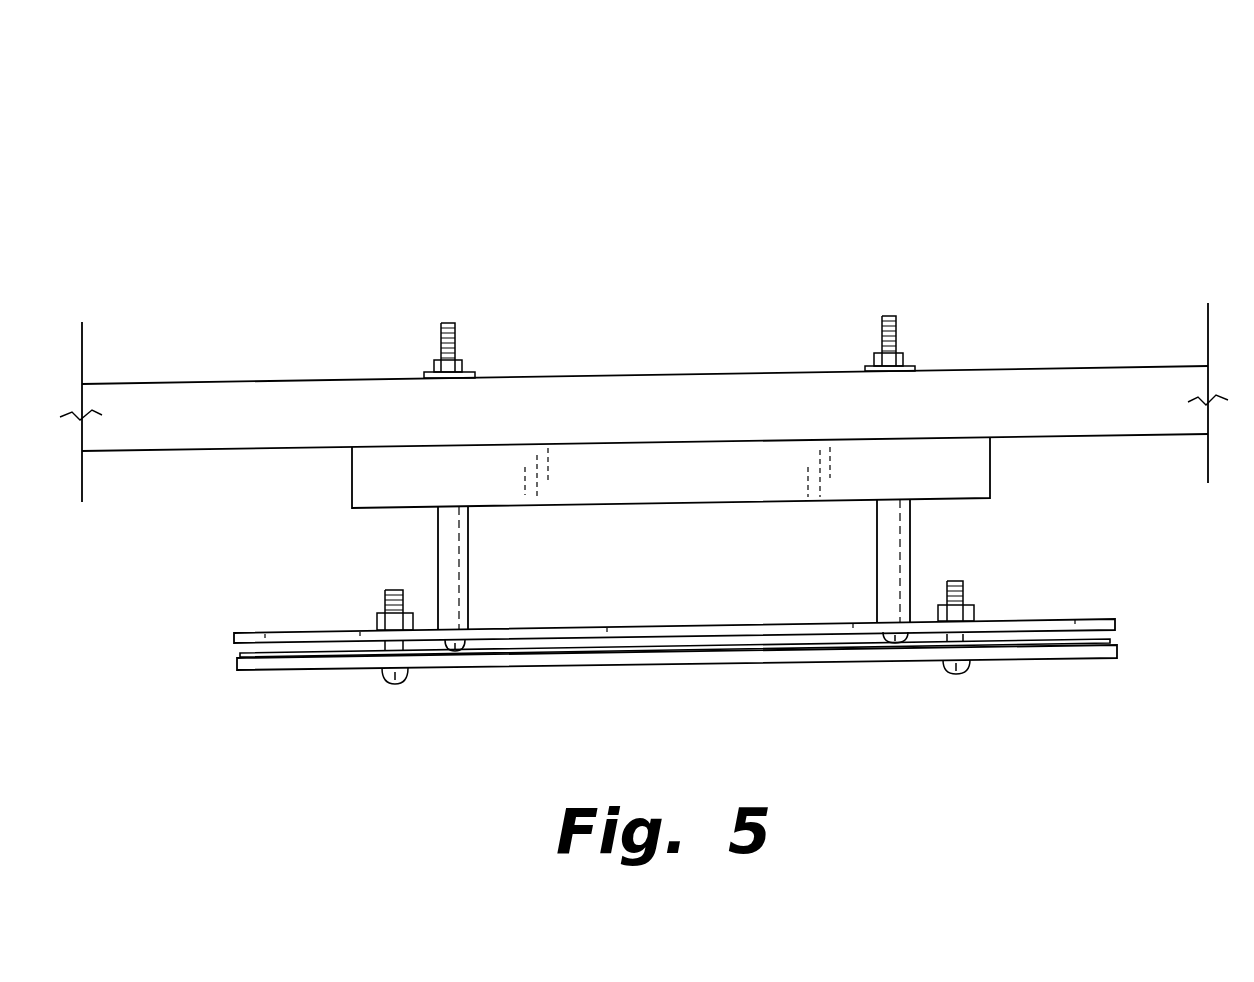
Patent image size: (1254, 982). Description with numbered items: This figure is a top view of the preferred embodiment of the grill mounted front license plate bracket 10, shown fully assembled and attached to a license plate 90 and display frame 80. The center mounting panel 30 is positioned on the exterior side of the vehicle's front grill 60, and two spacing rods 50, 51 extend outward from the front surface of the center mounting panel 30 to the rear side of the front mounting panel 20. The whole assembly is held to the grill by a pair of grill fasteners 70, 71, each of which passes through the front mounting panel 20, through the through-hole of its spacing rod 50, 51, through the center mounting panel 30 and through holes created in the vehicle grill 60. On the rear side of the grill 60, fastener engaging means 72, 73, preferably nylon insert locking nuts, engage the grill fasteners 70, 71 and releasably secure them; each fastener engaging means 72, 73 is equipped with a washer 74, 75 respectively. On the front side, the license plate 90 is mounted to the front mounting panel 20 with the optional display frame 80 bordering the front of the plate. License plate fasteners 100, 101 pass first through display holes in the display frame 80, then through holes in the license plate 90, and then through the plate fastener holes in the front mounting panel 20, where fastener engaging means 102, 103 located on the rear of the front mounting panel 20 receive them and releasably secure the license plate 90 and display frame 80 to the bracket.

The grill mounted front license plate bracket 10 is at (997, 151).
The front mounting panel 20 is at (677, 623).
The center mounting panel 30 is at (737, 483).
The spacing rod 50 is at (468, 603).
The spacing rod 51 is at (877, 585).
The front grill 60 is at (690, 417).
The grill fastener 70 is at (467, 668).
The grill fastener 71 is at (870, 661).
The fastener engaging means 72 is at (464, 360).
The fastener engaging means 73 is at (907, 353).
The washer 74 is at (423, 376).
The washer 75 is at (862, 368).
The license plate display frame 80 is at (1090, 660).
The license plate 90 is at (1110, 642).
The license plate fastener 100 is at (385, 675).
The license plate fastener 101 is at (965, 668).
The fastener engaging means 102 is at (377, 617).
The fastener engaging means 103 is at (973, 602).